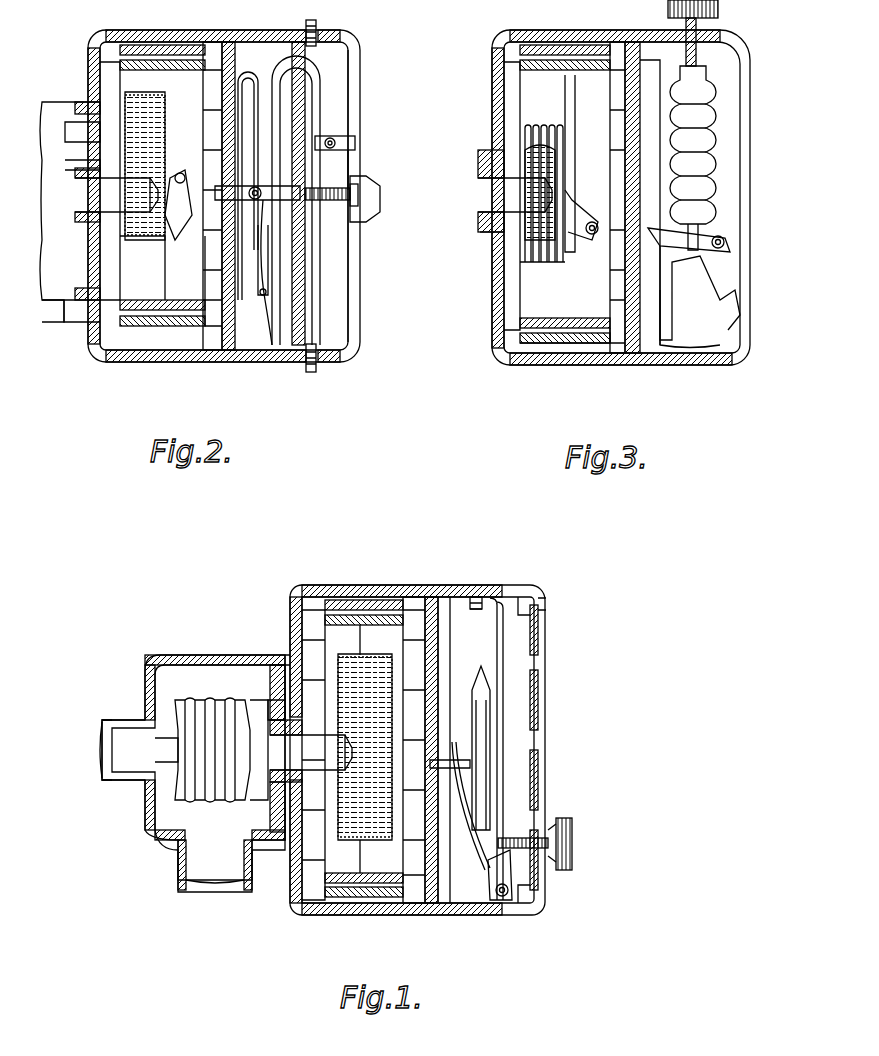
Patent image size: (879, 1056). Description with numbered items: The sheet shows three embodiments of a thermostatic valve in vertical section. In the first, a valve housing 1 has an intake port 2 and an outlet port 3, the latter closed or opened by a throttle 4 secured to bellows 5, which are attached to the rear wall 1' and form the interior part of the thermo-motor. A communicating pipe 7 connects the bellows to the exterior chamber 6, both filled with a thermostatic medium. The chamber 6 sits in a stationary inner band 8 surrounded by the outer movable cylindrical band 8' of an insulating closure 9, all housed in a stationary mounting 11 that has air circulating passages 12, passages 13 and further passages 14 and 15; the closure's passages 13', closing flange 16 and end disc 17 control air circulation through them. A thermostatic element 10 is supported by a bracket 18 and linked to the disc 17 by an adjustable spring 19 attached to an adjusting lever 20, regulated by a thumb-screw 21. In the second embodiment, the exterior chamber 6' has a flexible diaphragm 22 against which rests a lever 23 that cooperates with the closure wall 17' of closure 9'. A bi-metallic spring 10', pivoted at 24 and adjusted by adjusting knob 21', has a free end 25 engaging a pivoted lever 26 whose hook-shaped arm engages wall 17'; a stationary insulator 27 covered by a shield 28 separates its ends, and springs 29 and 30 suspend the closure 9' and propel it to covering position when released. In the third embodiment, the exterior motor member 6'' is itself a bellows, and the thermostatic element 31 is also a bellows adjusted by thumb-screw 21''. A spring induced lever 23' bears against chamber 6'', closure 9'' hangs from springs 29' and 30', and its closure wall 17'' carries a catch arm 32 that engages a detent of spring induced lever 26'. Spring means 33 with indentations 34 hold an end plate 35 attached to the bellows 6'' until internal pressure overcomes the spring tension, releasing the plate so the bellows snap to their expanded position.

In FIG. 2, the valve housing 1 is at (53, 315).
In FIG. 1, the valve housing 1 is at (177, 773).
In FIG. 2, the rear wall of the valve housing 1' is at (68, 318).
In FIG. 3, the rear wall of the valve housing 1' is at (468, 243).
In FIG. 1, the rear wall of the valve housing 1' is at (275, 792).
In FIG. 1, the intake port 2 is at (200, 868).
In FIG. 1, the outlet port 3 is at (148, 760).
In FIG. 1, the throttle 4 is at (165, 740).
In FIG. 2, the bellows 5 is at (52, 178).
In FIG. 1, the bellows 5 is at (172, 812).
In FIG. 1, the chamber 6 is at (326, 795).
In FIG. 2, the exterior chamber 6' is at (97, 297).
In FIG. 3, the exterior motor member 6'' is at (505, 270).
In FIG. 2, the communicating pipe 7 is at (88, 196).
In FIG. 3, the communicating pipe 7 is at (490, 196).
In FIG. 1, the communicating pipe 7 is at (311, 751).
In FIG. 2, the stationary inner band 8 is at (161, 163).
In FIG. 1, the stationary inner band 8 is at (322, 759).
In FIG. 1, the outer movable cylindrical band 8' is at (318, 600).
In FIG. 1, the closure 9 is at (452, 729).
In FIG. 2, the closure 9' is at (228, 175).
In FIG. 3, the closure 9'' is at (645, 227).
In FIG. 1, the thermostatic element 10 is at (504, 748).
In FIG. 2, the bi-metallic spring 10' is at (335, 200).
In FIG. 1, the stationary mounting 11 is at (362, 916).
In FIG. 2, the air circulating passages 12 is at (105, 32).
In FIG. 3, the air circulating passages 12 is at (505, 364).
In FIG. 1, the air circulating passages 12 is at (332, 560).
In FIG. 2, the passages 13 is at (197, 176).
In FIG. 3, the passages 13 is at (607, 229).
In FIG. 1, the passages 13 is at (421, 741).
In FIG. 2, the passages 13' is at (228, 317).
In FIG. 3, the passages 13' is at (622, 153).
In FIG. 1, the passages 13' is at (431, 740).
In FIG. 1, the air passage 14 is at (522, 590).
In FIG. 1, the air passage 15 is at (540, 618).
In FIG. 2, the closing flange 16 is at (250, 72).
In FIG. 3, the closing flange 16 is at (656, 354).
In FIG. 1, the closing flange 16 is at (478, 598).
In FIG. 1, the end disc 17 is at (454, 750).
In FIG. 2, the closure wall 17' is at (196, 348).
In FIG. 3, the closure wall 17'' is at (602, 367).
In FIG. 1, the bracket 18 is at (501, 672).
In FIG. 1, the adjustable spring 19 is at (482, 842).
In FIG. 1, the adjusting lever 20 is at (506, 875).
In FIG. 1, the thumb-screw 21 is at (560, 844).
In FIG. 2, the adjusting knob 21' is at (363, 199).
In FIG. 3, the thumb-screw 21'' is at (722, 33).
In FIG. 2, the flexible diaphragm 22 is at (160, 124).
In FIG. 2, the lever 23 is at (180, 218).
In FIG. 3, the spring induced lever 23' is at (566, 190).
In FIG. 2, the pivot 24 is at (335, 140).
In FIG. 2, the free end 25 is at (283, 292).
In FIG. 2, the pivoted lever 26 is at (257, 292).
In FIG. 3, the spring induced lever 26' is at (731, 291).
In FIG. 2, the stationary insulator 27 is at (305, 304).
In FIG. 2, the shield 28 is at (283, 318).
In FIG. 2, the spring 29 is at (307, 186).
In FIG. 3, the spring 29' is at (690, 319).
In FIG. 2, the spring 30 is at (84, 160).
In FIG. 3, the spring 30' is at (484, 196).
In FIG. 3, the thermostatic element 31 is at (714, 146).
In FIG. 3, the catch arm 32 is at (665, 236).
In FIG. 3, the spring means 33 is at (560, 78).
In FIG. 3, the indentations 34 is at (560, 364).
In FIG. 3, the end plate 35 is at (568, 98).